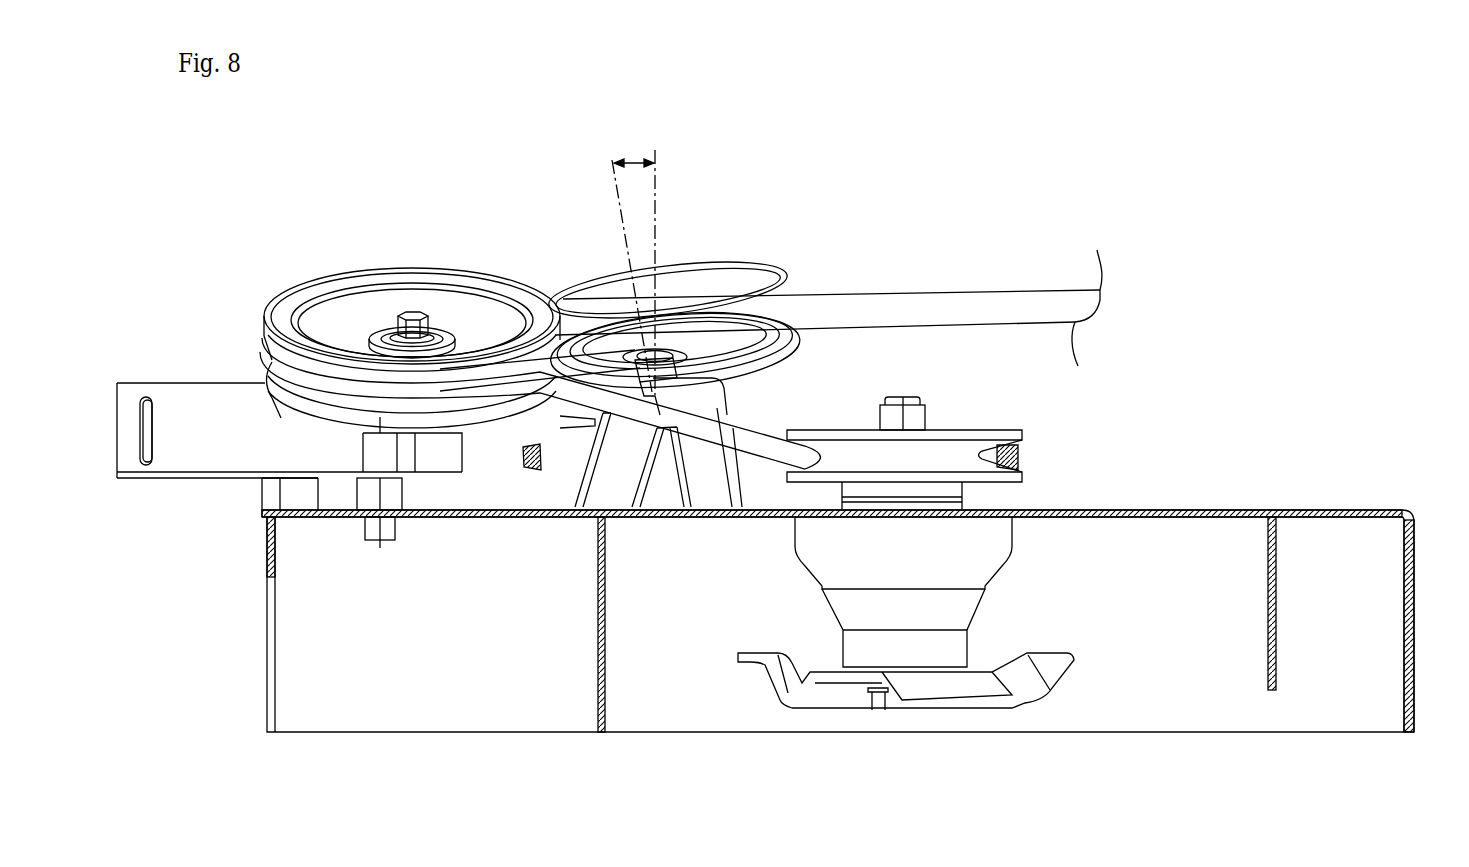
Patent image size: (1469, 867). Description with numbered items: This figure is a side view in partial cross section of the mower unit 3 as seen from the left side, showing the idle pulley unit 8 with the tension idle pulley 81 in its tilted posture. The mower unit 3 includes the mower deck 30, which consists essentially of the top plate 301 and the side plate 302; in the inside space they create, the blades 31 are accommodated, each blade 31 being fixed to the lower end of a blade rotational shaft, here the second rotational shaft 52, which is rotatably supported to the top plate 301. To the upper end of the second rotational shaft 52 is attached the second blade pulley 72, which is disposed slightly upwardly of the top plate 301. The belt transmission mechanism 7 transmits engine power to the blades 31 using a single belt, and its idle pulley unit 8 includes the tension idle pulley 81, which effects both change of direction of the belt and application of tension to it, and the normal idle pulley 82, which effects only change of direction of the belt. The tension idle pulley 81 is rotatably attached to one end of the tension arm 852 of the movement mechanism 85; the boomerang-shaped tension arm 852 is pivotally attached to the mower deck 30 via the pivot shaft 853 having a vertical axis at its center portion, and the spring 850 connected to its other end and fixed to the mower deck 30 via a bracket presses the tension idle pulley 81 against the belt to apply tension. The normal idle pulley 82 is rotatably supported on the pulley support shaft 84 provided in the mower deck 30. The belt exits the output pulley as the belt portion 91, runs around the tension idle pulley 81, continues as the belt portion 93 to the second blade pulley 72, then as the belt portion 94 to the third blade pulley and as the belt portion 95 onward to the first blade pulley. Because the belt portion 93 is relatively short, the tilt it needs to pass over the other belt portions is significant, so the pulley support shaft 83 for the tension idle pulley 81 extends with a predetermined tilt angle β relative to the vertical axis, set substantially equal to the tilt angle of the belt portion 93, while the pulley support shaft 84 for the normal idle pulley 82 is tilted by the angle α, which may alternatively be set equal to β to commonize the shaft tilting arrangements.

The mower unit 3 is at (1188, 226).
The belt transmission mechanism 7 is at (970, 284).
The idle pulley unit 8 is at (336, 258).
The tension idle pulley 81 is at (410, 285).
The normal idle pulley 82 is at (745, 262).
The pulley support shaft 83 is at (414, 310).
The pulley support shaft 84 is at (648, 376).
The movement mechanism 85 is at (238, 493).
The spring 850 is at (148, 398).
The tension arm 852 is at (178, 479).
The pivot shaft 853 is at (393, 490).
The belt portion 91 is at (862, 297).
The belt portion 93 is at (749, 425).
The belt portion 94 is at (1020, 455).
The belt portion 95 is at (530, 470).
The second rotational shaft 52 is at (910, 396).
The second blade pulley 72 is at (976, 426).
The mower deck 30 is at (1299, 508).
The top plate 301 is at (1218, 507).
The side plate 302 is at (1404, 606).
The blade 31 is at (830, 700).